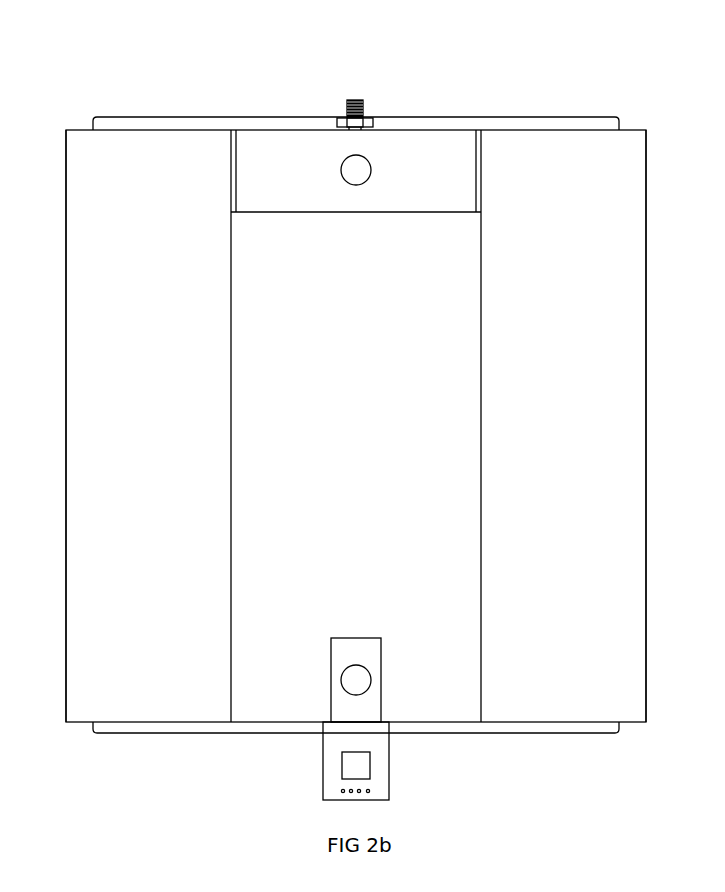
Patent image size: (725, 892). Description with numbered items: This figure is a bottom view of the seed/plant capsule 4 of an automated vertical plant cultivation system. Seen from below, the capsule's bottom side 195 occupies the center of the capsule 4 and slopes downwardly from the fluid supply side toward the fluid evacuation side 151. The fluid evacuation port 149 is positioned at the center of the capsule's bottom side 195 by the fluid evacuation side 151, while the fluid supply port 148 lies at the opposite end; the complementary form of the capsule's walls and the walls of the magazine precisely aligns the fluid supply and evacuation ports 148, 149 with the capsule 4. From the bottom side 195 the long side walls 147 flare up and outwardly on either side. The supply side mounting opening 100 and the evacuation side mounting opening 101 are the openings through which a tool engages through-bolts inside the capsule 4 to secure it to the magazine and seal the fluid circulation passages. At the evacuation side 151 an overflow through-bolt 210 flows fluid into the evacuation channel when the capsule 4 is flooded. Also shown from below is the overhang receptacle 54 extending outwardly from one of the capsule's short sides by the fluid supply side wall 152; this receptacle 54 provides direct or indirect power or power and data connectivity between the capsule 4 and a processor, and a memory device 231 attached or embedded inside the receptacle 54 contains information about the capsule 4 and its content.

The seed/plant capsule 4 is at (178, 70).
The overflow through-bolt 210 is at (356, 98).
The fluid evacuation side 151 is at (527, 116).
The evacuation side capsule's mounting opening 101 is at (418, 200).
The fluid evacuation port 149 is at (358, 185).
The long side walls 147 is at (66, 431).
The capsule's bottom side 195 is at (408, 425).
The supply side capsule's mounting opening 100 is at (412, 680).
The fluid supply port 148 is at (372, 680).
The overhang receptacle 54 is at (323, 766).
The memory device 231 is at (371, 767).
The fluid supply side wall 152 is at (557, 740).